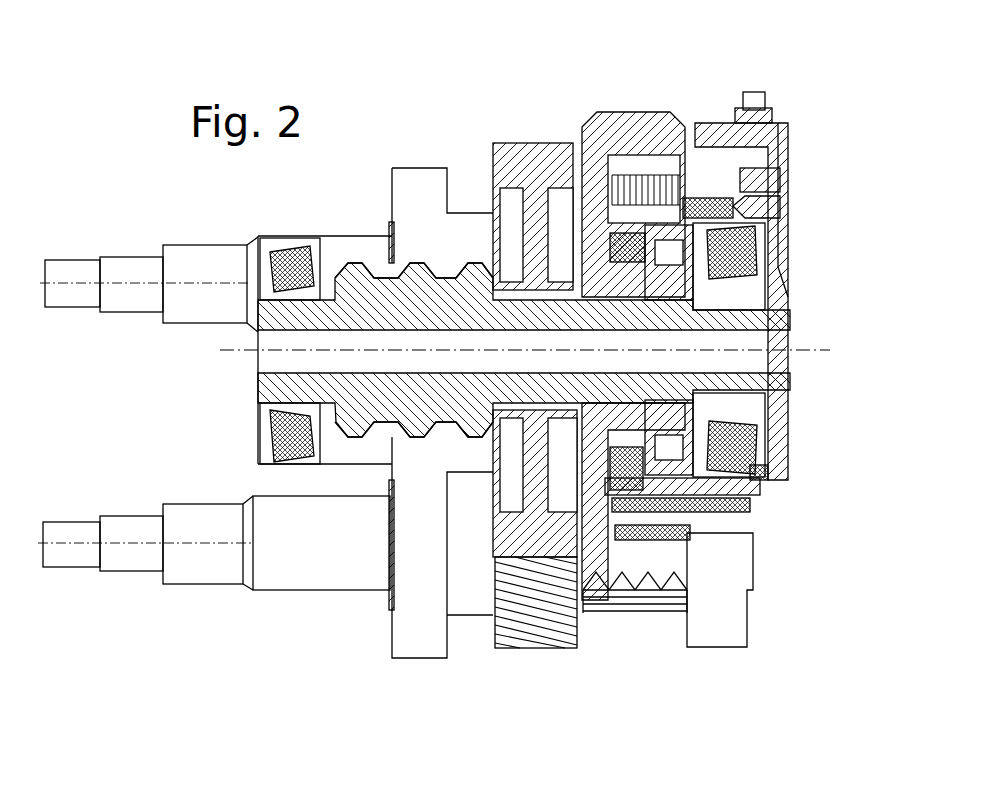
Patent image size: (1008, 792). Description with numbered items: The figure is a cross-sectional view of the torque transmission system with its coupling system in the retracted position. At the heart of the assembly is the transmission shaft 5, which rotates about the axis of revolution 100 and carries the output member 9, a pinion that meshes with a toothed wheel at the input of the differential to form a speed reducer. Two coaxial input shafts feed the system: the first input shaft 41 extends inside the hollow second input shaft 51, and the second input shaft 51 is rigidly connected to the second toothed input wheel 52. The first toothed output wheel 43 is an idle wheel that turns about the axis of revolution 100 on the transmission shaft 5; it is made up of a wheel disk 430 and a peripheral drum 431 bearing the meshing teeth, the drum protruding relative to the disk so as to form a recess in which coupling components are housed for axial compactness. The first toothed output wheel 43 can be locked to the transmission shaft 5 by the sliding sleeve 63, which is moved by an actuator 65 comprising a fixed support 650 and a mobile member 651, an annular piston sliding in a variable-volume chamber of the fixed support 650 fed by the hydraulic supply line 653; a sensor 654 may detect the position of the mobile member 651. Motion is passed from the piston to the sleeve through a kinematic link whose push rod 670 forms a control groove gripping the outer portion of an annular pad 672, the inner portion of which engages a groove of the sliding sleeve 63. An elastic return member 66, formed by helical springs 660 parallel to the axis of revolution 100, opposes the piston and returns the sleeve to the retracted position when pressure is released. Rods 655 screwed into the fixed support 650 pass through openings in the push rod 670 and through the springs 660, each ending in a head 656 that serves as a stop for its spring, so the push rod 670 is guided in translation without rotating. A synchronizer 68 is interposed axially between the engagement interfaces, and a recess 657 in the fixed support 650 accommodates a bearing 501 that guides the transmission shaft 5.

The transmission shaft 5 is at (270, 388).
The output member 9 is at (367, 278).
The first input shaft 41 is at (80, 267).
The first toothed output wheel 43 is at (588, 309).
The second input shaft 51 is at (280, 572).
The second toothed input wheel 52 is at (508, 632).
The sliding sleeve 63 is at (612, 495).
The actuator 65 is at (690, 168).
The elastic return member 66 is at (647, 165).
The synchronizer 68 is at (605, 462).
The axis of revolution 100 is at (228, 353).
The wheel disk 430 is at (588, 195).
The peripheral drum 431 is at (630, 140).
The bearing 501 is at (742, 425).
The fixed support 650 is at (778, 182).
The mobile member 651 is at (705, 211).
The hydraulic supply line 653 is at (768, 210).
The sensor 654 is at (745, 137).
The rods 655 is at (660, 525).
The head 656 is at (643, 472).
The recess 657 is at (757, 472).
The helical springs 660 is at (635, 535).
The push rod 670 is at (687, 505).
The annular pad 672 is at (665, 487).